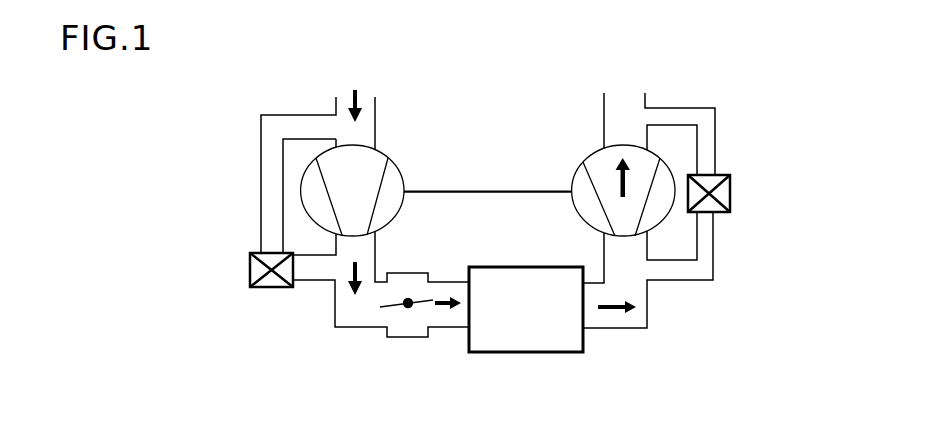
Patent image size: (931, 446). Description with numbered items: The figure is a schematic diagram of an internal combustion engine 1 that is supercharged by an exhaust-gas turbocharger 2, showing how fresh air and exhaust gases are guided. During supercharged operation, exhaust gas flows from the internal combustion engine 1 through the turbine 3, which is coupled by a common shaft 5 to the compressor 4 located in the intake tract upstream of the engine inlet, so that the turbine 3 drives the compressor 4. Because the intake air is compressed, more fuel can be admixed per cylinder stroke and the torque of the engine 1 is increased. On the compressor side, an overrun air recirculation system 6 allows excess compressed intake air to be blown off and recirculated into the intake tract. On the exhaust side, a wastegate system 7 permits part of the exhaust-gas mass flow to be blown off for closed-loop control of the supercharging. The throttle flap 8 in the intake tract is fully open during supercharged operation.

The internal combustion engine 1 is at (547, 353).
The exhaust-gas turbocharger 2 is at (525, 157).
The turbine 3 is at (603, 160).
The compressor 4 is at (388, 178).
The common shaft 5 is at (495, 193).
The overrun air recirculation system 6 is at (268, 283).
The wastegate system 7 is at (718, 213).
The throttle flap 8 is at (412, 312).